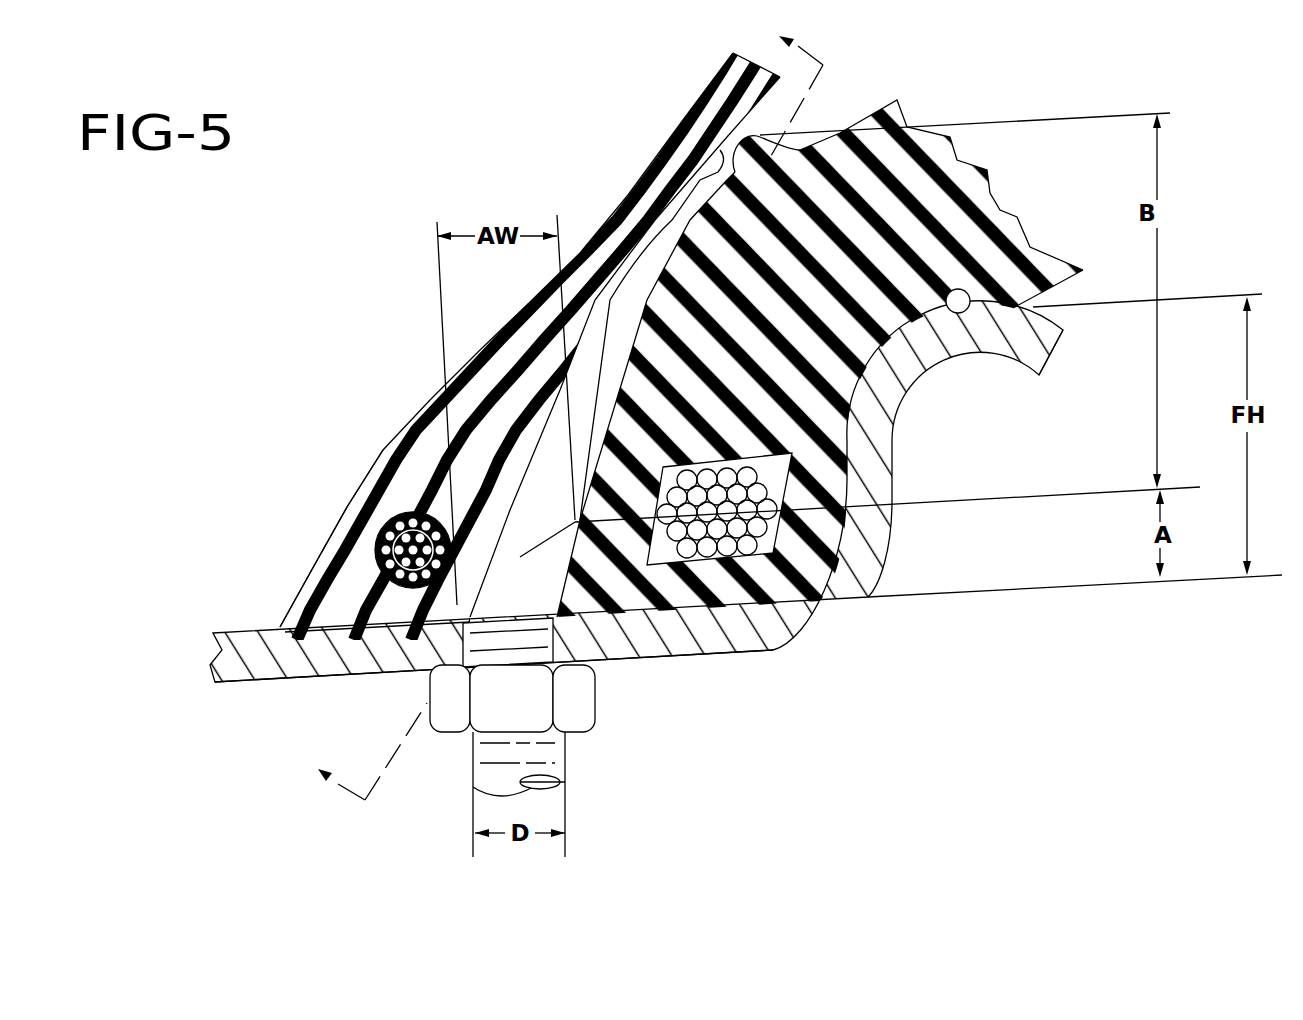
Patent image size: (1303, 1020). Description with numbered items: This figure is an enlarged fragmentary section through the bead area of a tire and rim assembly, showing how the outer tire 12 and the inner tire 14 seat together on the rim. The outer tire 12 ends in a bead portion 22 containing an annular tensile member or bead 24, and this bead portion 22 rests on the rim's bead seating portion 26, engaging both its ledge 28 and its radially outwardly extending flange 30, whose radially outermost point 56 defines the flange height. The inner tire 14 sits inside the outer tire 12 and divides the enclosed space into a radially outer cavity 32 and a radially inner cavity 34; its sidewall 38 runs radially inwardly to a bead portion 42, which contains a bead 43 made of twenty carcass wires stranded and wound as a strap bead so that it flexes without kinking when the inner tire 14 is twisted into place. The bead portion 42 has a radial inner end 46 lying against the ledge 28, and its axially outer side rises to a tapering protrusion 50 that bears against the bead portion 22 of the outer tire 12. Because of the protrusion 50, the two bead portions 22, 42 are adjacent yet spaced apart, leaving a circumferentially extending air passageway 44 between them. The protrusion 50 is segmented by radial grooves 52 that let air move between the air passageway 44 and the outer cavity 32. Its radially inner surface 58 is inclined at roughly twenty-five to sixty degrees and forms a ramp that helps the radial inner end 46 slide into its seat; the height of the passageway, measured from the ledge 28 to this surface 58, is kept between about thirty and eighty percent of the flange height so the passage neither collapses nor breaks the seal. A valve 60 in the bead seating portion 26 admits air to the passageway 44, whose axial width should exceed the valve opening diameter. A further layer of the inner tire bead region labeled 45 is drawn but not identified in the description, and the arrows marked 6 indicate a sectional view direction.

The section line 6- 6 is at (559, 408).
The outer tire 12 is at (935, 103).
The inner tire 14 is at (712, 66).
The bead portion 22 is at (975, 243).
The bead 24 is at (753, 548).
The bead seating portion 26 is at (732, 660).
The ledge 28 is at (667, 653).
The flange 30 is at (1035, 338).
The radially outer cavity 32 is at (720, 260).
The radially inner cavity 34 is at (575, 170).
The sidewall 38 is at (652, 168).
The bead portion 42 is at (317, 593).
The bead 43 is at (365, 527).
The air passageway 44 is at (503, 604).
The arm layer 45 is at (382, 452).
The radial inner end 46 is at (343, 660).
The protrusion 50 is at (553, 462).
The groove 52 is at (762, 162).
The radially outermost point 56 is at (946, 312).
The radially inner surface 58 is at (540, 548).
The valve 60 is at (545, 790).